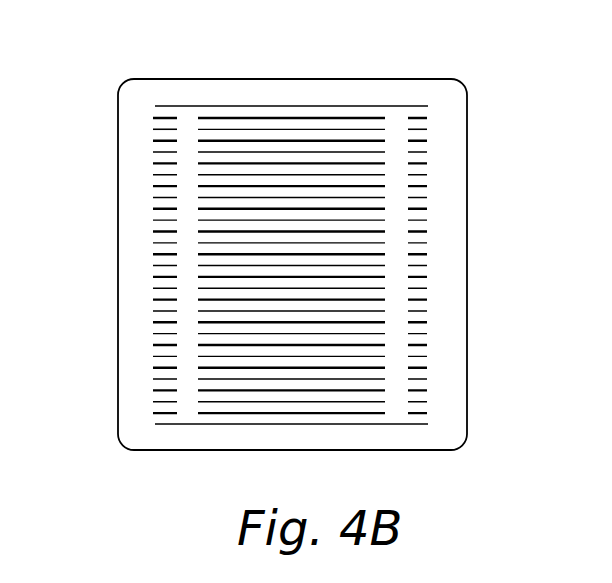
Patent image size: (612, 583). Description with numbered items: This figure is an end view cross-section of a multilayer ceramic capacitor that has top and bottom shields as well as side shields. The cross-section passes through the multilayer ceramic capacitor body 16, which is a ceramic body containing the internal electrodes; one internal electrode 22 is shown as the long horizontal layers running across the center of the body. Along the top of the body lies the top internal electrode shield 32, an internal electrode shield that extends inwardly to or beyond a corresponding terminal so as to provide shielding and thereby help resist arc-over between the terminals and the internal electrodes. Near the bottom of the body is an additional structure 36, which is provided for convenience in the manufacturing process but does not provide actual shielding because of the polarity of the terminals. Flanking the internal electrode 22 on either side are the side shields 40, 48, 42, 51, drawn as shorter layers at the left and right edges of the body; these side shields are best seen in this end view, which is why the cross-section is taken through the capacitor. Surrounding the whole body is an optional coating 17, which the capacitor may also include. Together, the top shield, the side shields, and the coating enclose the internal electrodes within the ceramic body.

The multilayer ceramic capacitor body 16 is at (217, 79).
The coating 17 is at (248, 79).
The top internal electrode shield 32 is at (283, 106).
The internal electrode 22 is at (357, 116).
The side shield 40 is at (157, 118).
The side shield 48 is at (157, 131).
The side shield 42 is at (422, 116).
The side shield 51 is at (422, 129).
The additional structure 36 is at (218, 424).